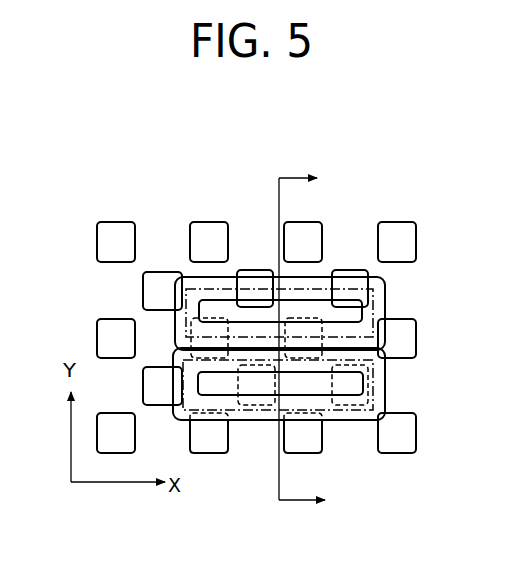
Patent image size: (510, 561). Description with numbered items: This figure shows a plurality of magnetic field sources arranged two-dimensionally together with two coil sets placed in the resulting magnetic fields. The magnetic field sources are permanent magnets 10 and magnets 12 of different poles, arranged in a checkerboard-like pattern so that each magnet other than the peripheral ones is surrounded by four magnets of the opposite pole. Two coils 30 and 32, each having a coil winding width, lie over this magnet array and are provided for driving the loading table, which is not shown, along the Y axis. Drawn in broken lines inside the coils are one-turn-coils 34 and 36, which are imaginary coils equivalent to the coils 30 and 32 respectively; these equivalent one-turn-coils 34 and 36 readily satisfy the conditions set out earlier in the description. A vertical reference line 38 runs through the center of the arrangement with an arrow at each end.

The magnets 10 is at (190, 227).
The magnets 12 is at (143, 288).
The coil 30 is at (309, 272).
The coil 32 is at (308, 412).
The one-turn-coil 34 is at (213, 289).
The one-turn-coil 36 is at (246, 410).
The center line / axis of coil movement 38 is at (279, 208).